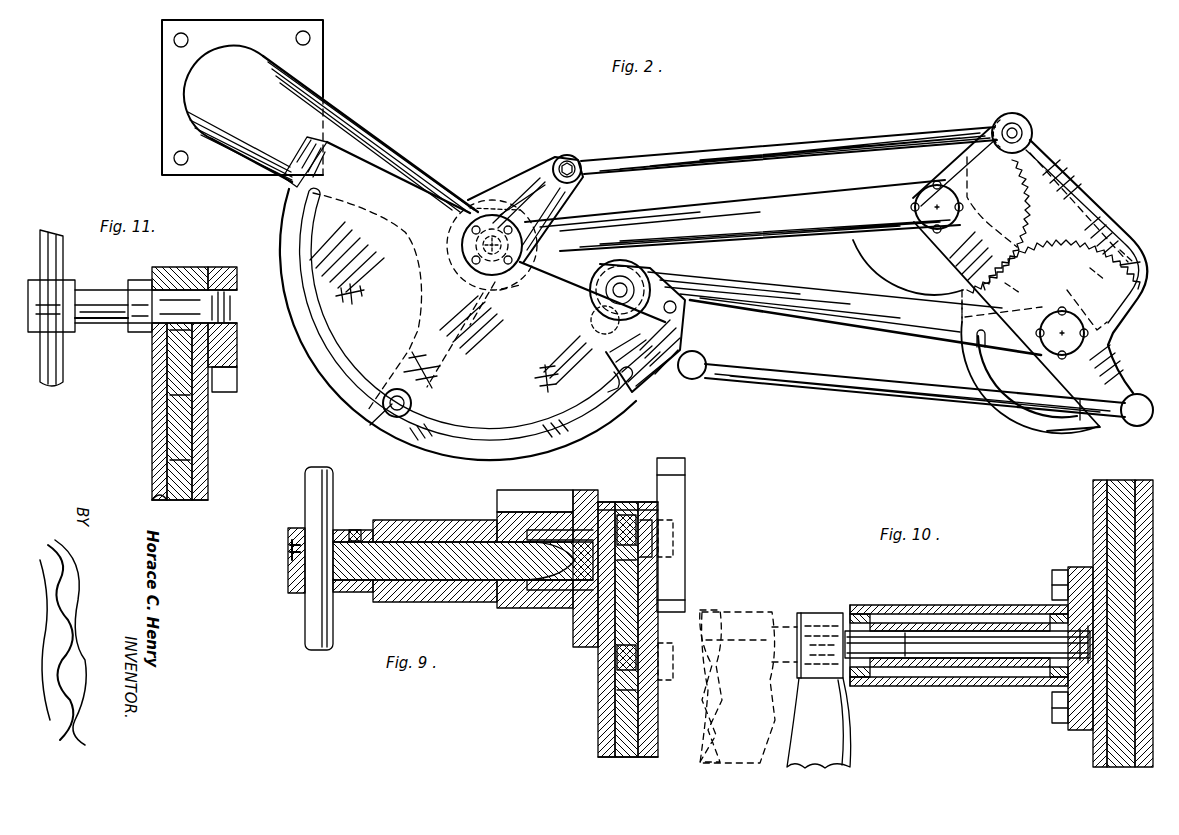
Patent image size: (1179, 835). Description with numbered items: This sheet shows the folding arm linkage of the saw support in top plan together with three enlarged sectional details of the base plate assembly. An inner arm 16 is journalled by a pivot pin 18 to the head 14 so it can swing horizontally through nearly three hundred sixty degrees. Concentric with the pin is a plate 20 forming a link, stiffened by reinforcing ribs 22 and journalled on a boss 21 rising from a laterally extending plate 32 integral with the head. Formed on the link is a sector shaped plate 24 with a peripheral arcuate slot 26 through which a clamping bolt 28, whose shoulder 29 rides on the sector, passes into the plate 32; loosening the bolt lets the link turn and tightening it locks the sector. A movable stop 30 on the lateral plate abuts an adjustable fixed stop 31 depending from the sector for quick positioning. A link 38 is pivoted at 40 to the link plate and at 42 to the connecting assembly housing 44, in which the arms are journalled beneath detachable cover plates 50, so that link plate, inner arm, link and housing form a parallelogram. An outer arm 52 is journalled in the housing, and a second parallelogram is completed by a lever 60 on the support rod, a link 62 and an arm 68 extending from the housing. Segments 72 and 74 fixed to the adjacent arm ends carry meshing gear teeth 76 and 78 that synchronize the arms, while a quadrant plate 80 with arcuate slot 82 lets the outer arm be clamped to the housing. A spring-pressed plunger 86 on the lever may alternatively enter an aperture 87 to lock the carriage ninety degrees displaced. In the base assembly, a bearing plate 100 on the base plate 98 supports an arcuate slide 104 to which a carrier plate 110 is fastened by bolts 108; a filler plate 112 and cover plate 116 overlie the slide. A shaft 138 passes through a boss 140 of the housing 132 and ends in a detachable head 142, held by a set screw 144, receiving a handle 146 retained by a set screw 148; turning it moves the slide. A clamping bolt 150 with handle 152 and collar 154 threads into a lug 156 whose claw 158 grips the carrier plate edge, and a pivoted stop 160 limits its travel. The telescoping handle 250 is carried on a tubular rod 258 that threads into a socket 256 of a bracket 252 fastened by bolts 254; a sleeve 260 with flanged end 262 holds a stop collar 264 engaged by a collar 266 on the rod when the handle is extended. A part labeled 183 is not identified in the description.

In FIG. 2, the head 14 is at (362, 146).
In FIG. 2, the inner arm 16 is at (634, 219).
In FIG. 2, the pivot pin 18 is at (470, 290).
In FIG. 2, the link plate 20 is at (500, 195).
In FIG. 2, the boss 21 is at (486, 206).
In FIG. 2, the reinforcing ribs 22 is at (525, 195).
In FIG. 2, the sector shaped plate 24 is at (360, 352).
In FIG. 2, the arcuate slot 26 is at (480, 438).
In FIG. 2, the clamping bolt 28 is at (393, 412).
In FIG. 2, the shoulder 29 is at (390, 400).
In FIG. 2, the movable stop member 30 is at (408, 350).
In FIG. 2, the adjustable fixed stop 31 is at (354, 302).
In FIG. 2, the laterally extending plate 32 is at (468, 322).
In FIG. 2, the link 38 is at (686, 155).
In FIG. 2, the pivot 40 is at (575, 160).
In FIG. 2, the pivot 42 is at (1022, 124).
In FIG. 2, the connecting assembly housing 44 is at (1083, 212).
In FIG. 2, the detachable cover plates 50 is at (927, 200).
In FIG. 2, the outer supporting arm 52 is at (806, 300).
In FIG. 2, the lever 60 is at (665, 378).
In FIG. 2, the link 62 is at (830, 382).
In FIG. 2, the arm 68 is at (1126, 386).
In FIG. 2, the segment 72 is at (872, 270).
In FIG. 2, the segment 74 is at (1138, 262).
In FIG. 2, the gear teeth 76 is at (1028, 175).
In FIG. 2, the gear teeth 78 is at (1108, 252).
In FIG. 2, the quadrant shaped plate 80 is at (1000, 360).
In FIG. 2, the arcuate slot 82 is at (1043, 420).
In FIG. 2, the spring-pressed plunger 86 is at (608, 370).
In FIG. 2, the aperture 87 is at (674, 316).
In FIG. 11, the base plate 98 is at (152, 398).
In FIG. 9, the base plate 98 is at (598, 690).
In FIG. 10, the base plate 98 is at (1095, 540).
In FIG. 11, the bearing plate 100 is at (200, 502).
In FIG. 9, the bearing plate 100 is at (605, 736).
In FIG. 11, the slide 104 is at (168, 430).
In FIG. 9, the slide 104 is at (652, 625).
In FIG. 9, the bolts 108 is at (668, 678).
In FIG. 11, the carrier plate 110 is at (209, 462).
In FIG. 9, the carrier plate 110 is at (656, 718).
In FIG. 11, the filler plate 112 is at (152, 270).
In FIG. 9, the filler plate 112 is at (672, 517).
In FIG. 11, the cover plate 116 is at (216, 268).
In FIG. 9, the cover plate 116 is at (652, 585).
In FIG. 9, the housing 132 is at (548, 602).
In FIG. 9, the shaft 138 is at (412, 535).
In FIG. 9, the boss 140 is at (435, 585).
In FIG. 9, the detachable head 142 is at (295, 530).
In FIG. 9, the set screw 144 is at (358, 528).
In FIG. 9, the handle 146 is at (312, 598).
In FIG. 9, the set screw 148 is at (290, 562).
In FIG. 11, the clamping bolt 150 is at (104, 320).
In FIG. 11, the handle 152 is at (50, 360).
In FIG. 11, the collar 154 is at (140, 330).
In FIG. 11, the clamping lug 156 is at (222, 344).
In FIG. 11, the finger 158 is at (225, 392).
In FIG. 9, the stop 160 is at (686, 500).
In FIG. 9, the plate 183 is at (627, 500).
In FIG. 9, the telescopically adjustable handle 250 is at (711, 686).
In FIG. 10, the telescopically adjustable handle 250 is at (760, 735).
In FIG. 10, the bracket 252 is at (1072, 730).
In FIG. 10, the bolts 254 is at (1052, 578).
In FIG. 10, the threaded socket 256 is at (1058, 690).
In FIG. 10, the tubular rod 258 is at (985, 668).
In FIG. 10, the sleeve 260 is at (912, 606).
In FIG. 10, the flanged outer end 262 is at (852, 608).
In FIG. 10, the stop ring 264 is at (875, 612).
In FIG. 10, the collar 266 is at (1056, 614).